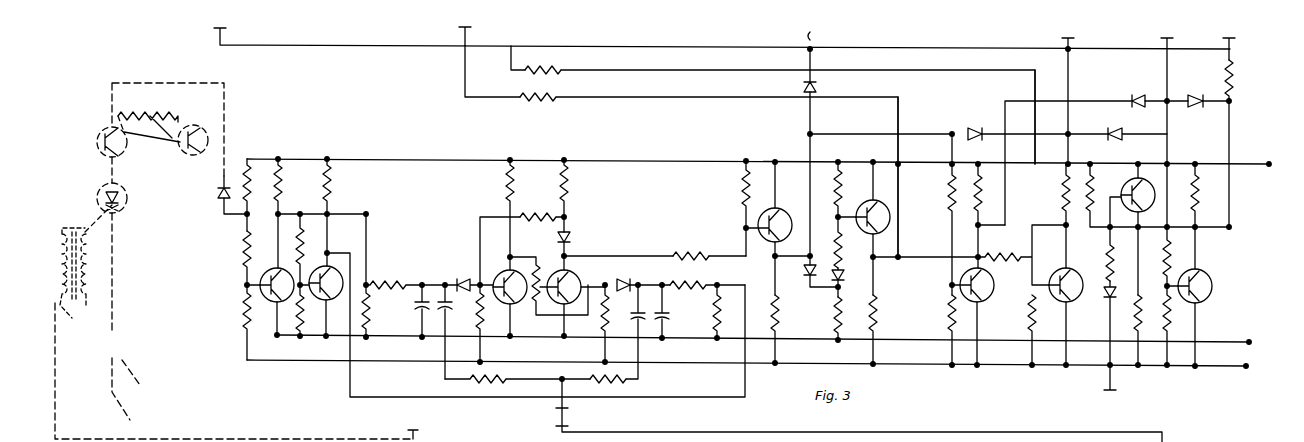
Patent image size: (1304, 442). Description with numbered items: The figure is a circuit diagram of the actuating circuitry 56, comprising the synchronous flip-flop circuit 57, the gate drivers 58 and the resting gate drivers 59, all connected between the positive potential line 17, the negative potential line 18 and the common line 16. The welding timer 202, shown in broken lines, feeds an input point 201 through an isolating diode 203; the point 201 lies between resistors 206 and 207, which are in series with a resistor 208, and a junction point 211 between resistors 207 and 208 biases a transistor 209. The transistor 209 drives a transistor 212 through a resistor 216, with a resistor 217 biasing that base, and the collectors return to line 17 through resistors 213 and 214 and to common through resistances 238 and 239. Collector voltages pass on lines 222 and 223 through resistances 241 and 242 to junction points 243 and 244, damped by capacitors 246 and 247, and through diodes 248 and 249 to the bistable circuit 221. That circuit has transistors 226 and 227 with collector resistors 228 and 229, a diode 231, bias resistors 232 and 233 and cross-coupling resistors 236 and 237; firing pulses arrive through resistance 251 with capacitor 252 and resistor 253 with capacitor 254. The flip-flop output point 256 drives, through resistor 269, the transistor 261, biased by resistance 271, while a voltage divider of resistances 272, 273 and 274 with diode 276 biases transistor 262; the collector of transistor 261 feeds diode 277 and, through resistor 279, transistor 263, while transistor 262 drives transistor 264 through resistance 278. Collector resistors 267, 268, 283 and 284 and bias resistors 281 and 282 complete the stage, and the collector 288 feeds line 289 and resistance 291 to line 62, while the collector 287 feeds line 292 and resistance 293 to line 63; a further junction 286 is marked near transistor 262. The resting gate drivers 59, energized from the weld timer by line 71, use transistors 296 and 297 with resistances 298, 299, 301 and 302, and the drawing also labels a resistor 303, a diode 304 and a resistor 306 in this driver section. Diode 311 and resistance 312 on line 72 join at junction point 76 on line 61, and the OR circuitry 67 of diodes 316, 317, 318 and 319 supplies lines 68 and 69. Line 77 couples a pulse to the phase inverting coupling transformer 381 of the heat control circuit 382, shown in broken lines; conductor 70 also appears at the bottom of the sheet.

The common line 16 is at (278, 336).
The positive potential line 17 is at (292, 136).
The negative potential line 18 is at (250, 362).
The actuating circuitry 56 is at (1196, 386).
The synchronous flip-flop circuit 57 is at (686, 158).
The gate drivers 58 is at (1062, 384).
The resting gate drivers 59 is at (1090, 384).
The output line 61 is at (660, 54).
The output line 62 is at (464, 82).
The output line 63 is at (510, 64).
The OR circuitry 67 is at (1238, 114).
The line 68 is at (1066, 40).
The line 69 is at (1164, 40).
The conductor 70 is at (1183, 435).
The line 71 is at (1112, 380).
The output line 72 is at (1226, 48).
The junction point 76 is at (820, 144).
The line 77 is at (56, 380).
The input point 201 is at (244, 214).
The welding timer 202 is at (170, 150).
The isolating diode 203 is at (218, 196).
The resistor 206 is at (238, 164).
The resistor 207 is at (242, 238).
The resistor 208 is at (244, 305).
The transistor 209 is at (268, 274).
The junction point 211 is at (246, 283).
The transistor 212 is at (334, 296).
The resistor 213 is at (280, 204).
The resistor 214 is at (328, 180).
The resistor 216 is at (306, 250).
The resistor 217 is at (304, 325).
The bistable circuit 221 is at (484, 204).
The line 222 is at (352, 240).
The line 223 is at (400, 396).
The transistor 226 is at (504, 278).
The transistor 227 is at (582, 276).
The resistor 228 is at (512, 174).
The resistor 229 is at (568, 176).
The diode 231 is at (572, 240).
The resistor 232 is at (484, 314).
The resistor 233 is at (604, 328).
The resistor 236 is at (554, 222).
The resistor 237 is at (548, 270).
The resistance 238 is at (370, 318).
The resistance 239 is at (714, 318).
The resistance 241 is at (410, 282).
The resistance 242 is at (700, 284).
The junction point 243 is at (422, 270).
The junction point 244 is at (702, 277).
The capacitor 246 is at (420, 300).
The capacitor 247 is at (666, 312).
The diode 248 is at (468, 280).
The diode 249 is at (614, 282).
The resistance 251 is at (470, 380).
The capacitor 252 is at (448, 306).
The resistor 253 is at (612, 380).
The capacitor 254 is at (634, 320).
The output point 256 is at (568, 256).
The transistor 261 is at (800, 200).
The transistor 262 is at (882, 202).
The transistor 263 is at (994, 290).
The transistor 264 is at (1058, 266).
The resistor 267 is at (780, 310).
The resistor 268 is at (877, 310).
The resistor 269 is at (672, 254).
The resistance 271 is at (744, 186).
The resistance 272 is at (842, 196).
The resistance 273 is at (834, 240).
The resistance 274 is at (834, 320).
The diode 276 is at (842, 276).
The diode 277 is at (806, 272).
The resistance 278 is at (984, 250).
The resistor 279 is at (944, 172).
The resistor 281 is at (948, 324).
The resistor 282 is at (1028, 324).
The resistor 283 is at (996, 160).
The resistor 284 is at (1072, 170).
The junction 286 is at (910, 219).
The collector 287 is at (1068, 228).
The collector 288 is at (874, 260).
The line 289 is at (900, 104).
The resistance 291 is at (556, 99).
The line 292 is at (1034, 82).
The resistance 293 is at (560, 72).
The transistor 296 is at (1156, 168).
The transistor 297 is at (1200, 270).
The resistance 298 is at (1149, 331).
The resistance 299 is at (1186, 168).
The resistance 301 is at (1094, 180).
The resistor 302 is at (1170, 312).
The resistor 303 is at (1106, 258).
The diode 304 is at (1108, 302).
The resistor 306 is at (1180, 248).
The diode 311 is at (818, 88).
The resistance 312 is at (1232, 68).
The diode 316 is at (990, 110).
The diode 317 is at (1118, 128).
The diode 318 is at (1144, 94).
The diode 319 is at (1208, 78).
The phase inverting coupling transformer 381 is at (72, 322).
The heat control circuit 382 is at (122, 248).